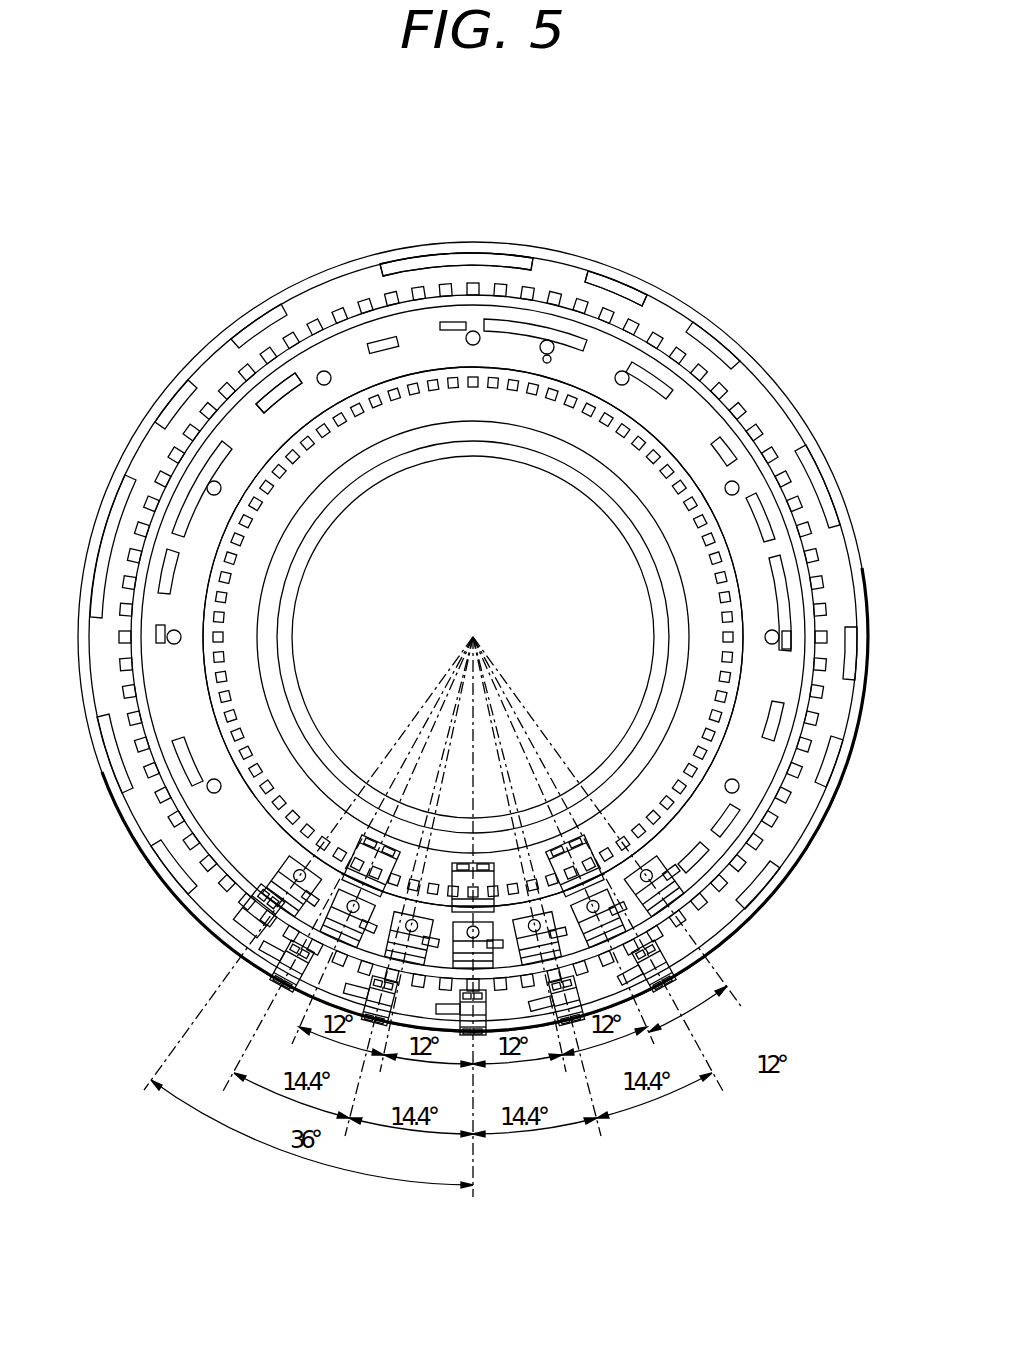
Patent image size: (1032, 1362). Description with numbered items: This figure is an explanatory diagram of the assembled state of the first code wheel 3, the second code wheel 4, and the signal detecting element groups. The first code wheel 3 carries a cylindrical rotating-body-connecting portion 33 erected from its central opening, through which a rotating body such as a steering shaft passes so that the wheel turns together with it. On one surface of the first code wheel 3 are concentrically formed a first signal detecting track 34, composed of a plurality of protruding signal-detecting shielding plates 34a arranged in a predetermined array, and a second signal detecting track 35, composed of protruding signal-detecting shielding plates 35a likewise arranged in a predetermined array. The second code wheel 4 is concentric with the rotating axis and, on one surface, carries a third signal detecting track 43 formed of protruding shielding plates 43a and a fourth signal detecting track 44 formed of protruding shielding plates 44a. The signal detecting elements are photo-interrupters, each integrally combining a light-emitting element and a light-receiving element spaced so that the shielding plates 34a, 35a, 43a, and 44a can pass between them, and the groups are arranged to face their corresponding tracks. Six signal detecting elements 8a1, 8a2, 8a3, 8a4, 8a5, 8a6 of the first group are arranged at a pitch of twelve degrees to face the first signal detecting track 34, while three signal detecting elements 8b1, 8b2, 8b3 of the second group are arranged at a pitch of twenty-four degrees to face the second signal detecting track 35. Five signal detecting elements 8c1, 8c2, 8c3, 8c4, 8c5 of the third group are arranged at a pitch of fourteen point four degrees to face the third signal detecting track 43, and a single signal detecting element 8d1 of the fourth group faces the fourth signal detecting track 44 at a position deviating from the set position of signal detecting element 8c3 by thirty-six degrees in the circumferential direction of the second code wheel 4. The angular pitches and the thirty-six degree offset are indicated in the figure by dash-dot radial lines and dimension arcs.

The first code wheel 3 is at (598, 358).
The second code wheel 4 is at (738, 333).
The rotating-body-connecting portion 33 is at (600, 550).
The first signal detecting track 34 is at (279, 393).
The signal-detecting shielding plates 34a is at (260, 397).
The second signal detecting track 35 is at (473, 637).
The signal-detecting shielding plates 35a is at (370, 393).
The third signal detecting track 43 is at (456, 264).
The signal-detecting shielding plates 43a is at (416, 262).
The fourth signal detecting track 44 is at (616, 288).
The signal-detecting shielding plates 44a is at (566, 296).
The signal detecting element 8a1 is at (278, 912).
The signal detecting element 8a2 is at (348, 925).
The signal detecting element 8a3 is at (487, 965).
The signal detecting element 8a4 is at (560, 965).
The signal detecting element 8a5 is at (648, 900).
The signal detecting element 8a6 is at (690, 866).
The signal detecting element 8b1 is at (378, 845).
The signal detecting element 8b2 is at (463, 863).
The signal detecting element 8b3 is at (566, 848).
The signal detecting element 8c1 is at (295, 950).
The signal detecting element 8c2 is at (378, 1040).
The signal detecting element 8c3 is at (462, 1045).
The signal detecting element 8c4 is at (578, 1010).
The signal detecting element 8c5 is at (650, 952).
The signal detecting element 8d1 is at (262, 890).